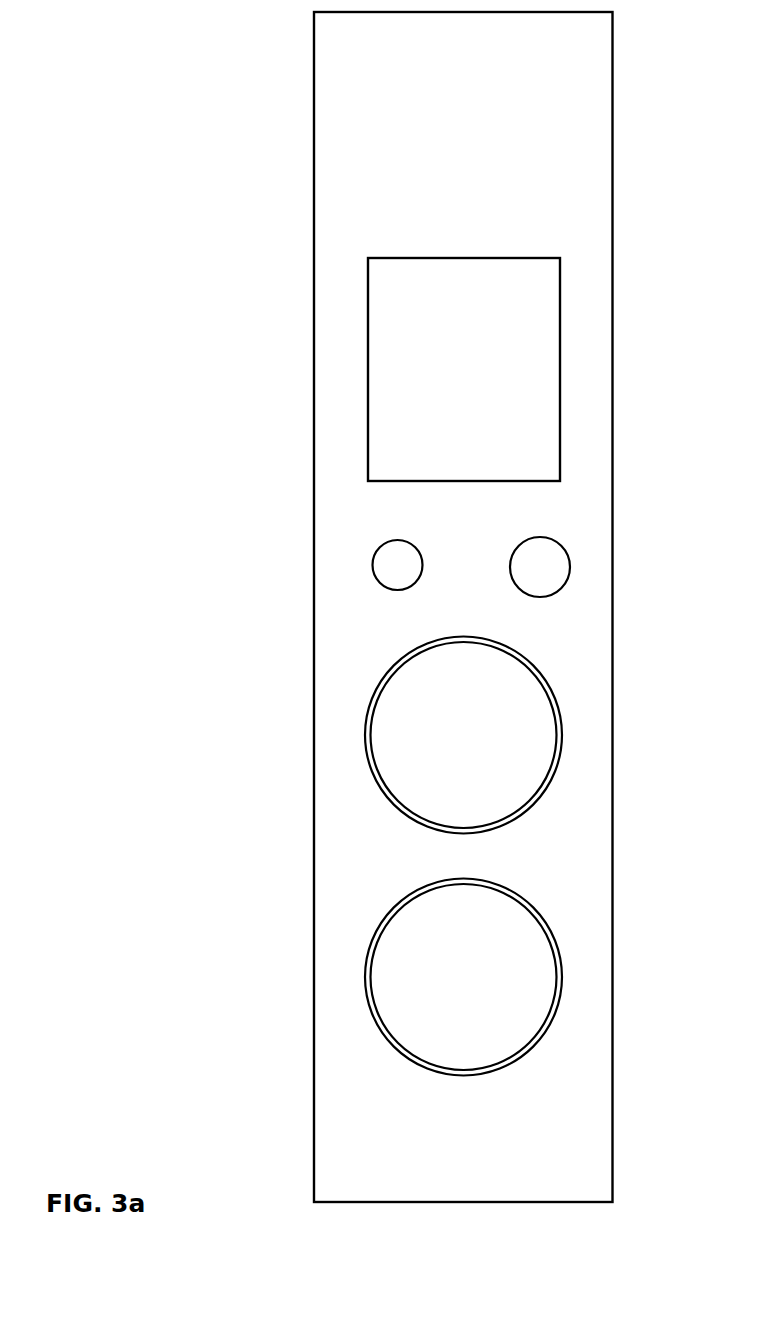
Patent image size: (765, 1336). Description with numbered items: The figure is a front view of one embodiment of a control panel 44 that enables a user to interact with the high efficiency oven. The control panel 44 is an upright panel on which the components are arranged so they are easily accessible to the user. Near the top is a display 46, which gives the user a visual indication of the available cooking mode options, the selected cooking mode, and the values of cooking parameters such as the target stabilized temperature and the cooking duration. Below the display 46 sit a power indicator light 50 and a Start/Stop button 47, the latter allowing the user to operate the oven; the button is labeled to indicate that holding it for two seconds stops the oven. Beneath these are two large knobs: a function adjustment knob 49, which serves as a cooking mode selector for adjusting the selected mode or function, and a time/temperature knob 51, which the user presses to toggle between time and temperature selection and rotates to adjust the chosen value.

The control panel 44 is at (150, 249).
The display 46 is at (451, 374).
The Start/Stop button 47 is at (542, 567).
The function adjustment knob 49 is at (450, 746).
The power indicator light 50 is at (390, 558).
The time/temperature knob 51 is at (450, 988).